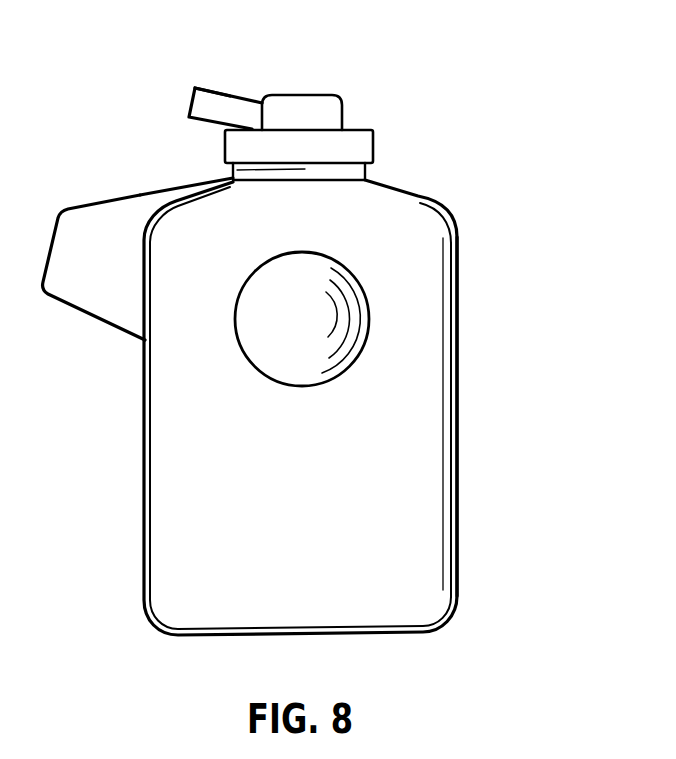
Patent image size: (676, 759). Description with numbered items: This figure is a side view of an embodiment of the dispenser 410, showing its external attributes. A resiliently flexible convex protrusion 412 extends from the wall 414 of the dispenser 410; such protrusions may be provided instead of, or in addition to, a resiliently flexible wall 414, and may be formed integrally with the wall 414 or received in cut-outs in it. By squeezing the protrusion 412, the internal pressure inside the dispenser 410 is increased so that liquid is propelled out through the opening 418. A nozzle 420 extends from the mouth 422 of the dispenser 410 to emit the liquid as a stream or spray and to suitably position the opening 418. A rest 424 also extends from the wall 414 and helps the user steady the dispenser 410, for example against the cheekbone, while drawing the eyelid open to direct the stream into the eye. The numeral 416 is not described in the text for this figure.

The dispenser 410 is at (475, 222).
The resiliently flexible convex protrusion 412 is at (370, 307).
The wall 414 is at (458, 408).
The inner wall 416 is at (458, 522).
The opening 418 is at (183, 102).
The nozzle 420 is at (207, 88).
The mouth 422 is at (425, 146).
The rest 424 is at (63, 302).